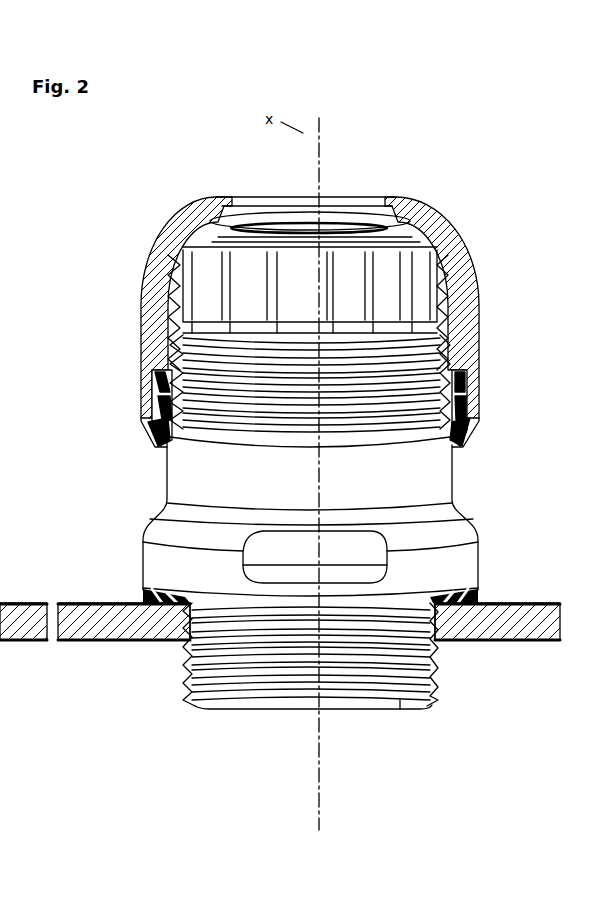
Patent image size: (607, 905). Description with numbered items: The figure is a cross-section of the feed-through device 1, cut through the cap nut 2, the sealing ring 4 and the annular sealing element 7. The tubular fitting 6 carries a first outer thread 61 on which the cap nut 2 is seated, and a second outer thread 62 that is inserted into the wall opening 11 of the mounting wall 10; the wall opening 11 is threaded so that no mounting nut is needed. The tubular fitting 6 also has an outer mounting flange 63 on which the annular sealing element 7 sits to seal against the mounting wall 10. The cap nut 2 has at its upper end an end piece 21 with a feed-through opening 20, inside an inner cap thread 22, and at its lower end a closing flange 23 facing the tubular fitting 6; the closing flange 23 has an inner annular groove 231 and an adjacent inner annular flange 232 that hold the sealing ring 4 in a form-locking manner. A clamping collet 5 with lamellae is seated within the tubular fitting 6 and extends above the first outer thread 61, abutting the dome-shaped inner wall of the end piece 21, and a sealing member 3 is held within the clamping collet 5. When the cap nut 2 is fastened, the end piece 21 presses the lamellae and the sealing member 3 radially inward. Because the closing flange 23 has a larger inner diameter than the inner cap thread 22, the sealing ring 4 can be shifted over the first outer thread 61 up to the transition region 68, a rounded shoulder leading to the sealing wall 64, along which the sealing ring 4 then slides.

The feed-through device 1 is at (124, 183).
The cap nut 2 is at (140, 332).
The sealing member 3 is at (252, 238).
The sealing ring 4 is at (140, 428).
The clamping collet 5 is at (208, 277).
The tubular fitting 6 is at (160, 518).
The annular sealing element 7 is at (150, 602).
The mounting wall 10 is at (0, 657).
The wall opening 11 is at (428, 640).
The feed-through opening 20 is at (348, 217).
The end piece 21 is at (183, 229).
The inner cap thread 22 is at (172, 307).
The closing flange 23 is at (150, 383).
The inner annular groove 231 is at (160, 370).
The inner annular flange 232 is at (152, 397).
The first outer thread 61 is at (440, 357).
The second outer thread 62 is at (187, 672).
The outer mounting flange 63 is at (427, 558).
The sealing wall 64 is at (417, 485).
The transition region 68 is at (415, 442).